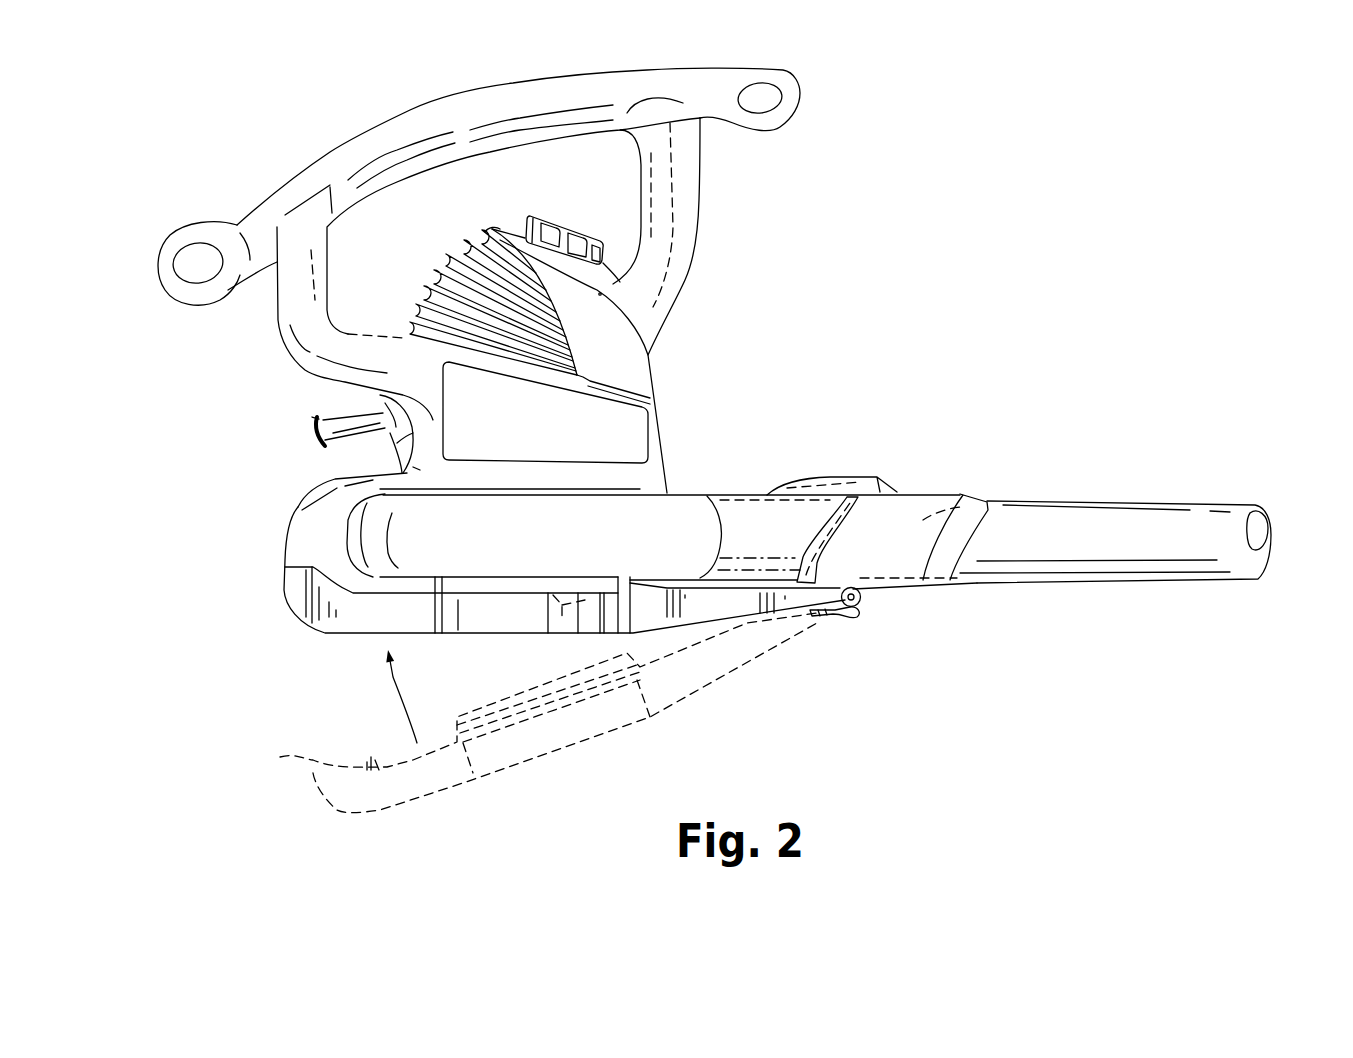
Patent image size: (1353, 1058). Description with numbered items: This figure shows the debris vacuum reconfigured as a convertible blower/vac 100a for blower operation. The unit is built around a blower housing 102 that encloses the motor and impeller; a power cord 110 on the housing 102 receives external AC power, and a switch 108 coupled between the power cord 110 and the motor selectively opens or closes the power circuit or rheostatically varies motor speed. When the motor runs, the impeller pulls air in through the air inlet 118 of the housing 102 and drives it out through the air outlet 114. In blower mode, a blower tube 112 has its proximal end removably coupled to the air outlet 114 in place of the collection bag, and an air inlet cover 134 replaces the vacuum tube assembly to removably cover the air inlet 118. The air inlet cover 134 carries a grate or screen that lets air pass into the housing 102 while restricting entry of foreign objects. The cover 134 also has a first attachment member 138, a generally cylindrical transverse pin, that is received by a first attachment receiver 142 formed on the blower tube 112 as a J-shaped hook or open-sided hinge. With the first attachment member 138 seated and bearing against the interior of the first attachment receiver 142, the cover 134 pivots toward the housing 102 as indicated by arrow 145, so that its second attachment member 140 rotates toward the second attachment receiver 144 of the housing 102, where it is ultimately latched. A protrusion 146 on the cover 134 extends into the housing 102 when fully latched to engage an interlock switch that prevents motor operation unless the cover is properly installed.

The convertible blower/vac 100a is at (763, 259).
The blower housing 102 is at (648, 358).
The switch 108 is at (549, 218).
The power cord 110 is at (347, 423).
The blower tube 112 is at (1020, 497).
The air outlet 114 is at (970, 497).
The air inlet 118 is at (630, 578).
The air inlet cover 134 is at (303, 622).
The first attachment member 138 is at (862, 597).
The second attachment member 140 is at (280, 757).
The first attachment receiver 142 is at (857, 617).
The second attachment receiver 144 is at (290, 543).
The arrow 145 is at (397, 692).
The protrusion 146 is at (368, 760).